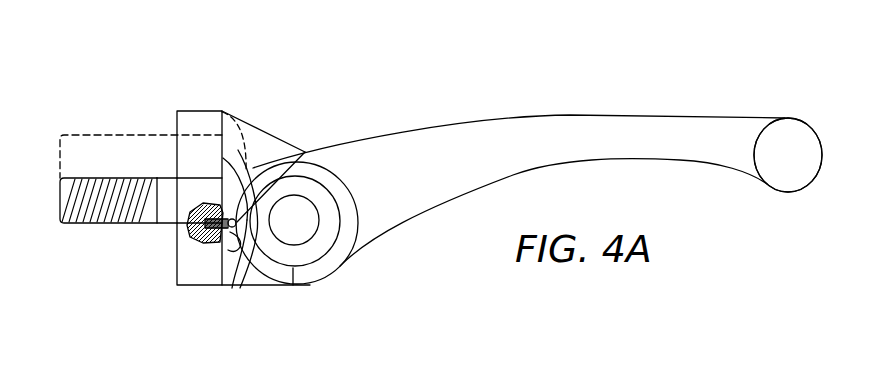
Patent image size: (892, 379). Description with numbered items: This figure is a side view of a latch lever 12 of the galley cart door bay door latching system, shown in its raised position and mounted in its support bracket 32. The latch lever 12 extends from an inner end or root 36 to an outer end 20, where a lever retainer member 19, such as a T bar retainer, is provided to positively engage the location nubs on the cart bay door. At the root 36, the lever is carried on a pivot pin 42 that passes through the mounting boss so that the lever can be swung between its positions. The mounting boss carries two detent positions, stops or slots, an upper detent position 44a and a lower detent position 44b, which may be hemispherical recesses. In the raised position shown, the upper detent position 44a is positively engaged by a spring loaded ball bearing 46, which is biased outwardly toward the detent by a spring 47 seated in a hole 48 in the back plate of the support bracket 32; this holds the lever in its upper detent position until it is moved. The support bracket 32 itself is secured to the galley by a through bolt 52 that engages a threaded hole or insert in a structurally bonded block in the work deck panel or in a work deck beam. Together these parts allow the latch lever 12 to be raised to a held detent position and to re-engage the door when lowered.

The latch lever 12 is at (458, 122).
The lever retainer member 19 is at (822, 156).
The outer end 20 is at (751, 97).
The support bracket 32 is at (187, 142).
The root 36 is at (306, 118).
The pivot pin 42 is at (293, 222).
The upper detent position 44a is at (236, 220).
The lower detent position 44b is at (232, 288).
The spring loaded ball bearing 46 is at (245, 240).
The spring 47 is at (189, 246).
The hole 48 is at (218, 248).
The through bolt 52 is at (60, 157).